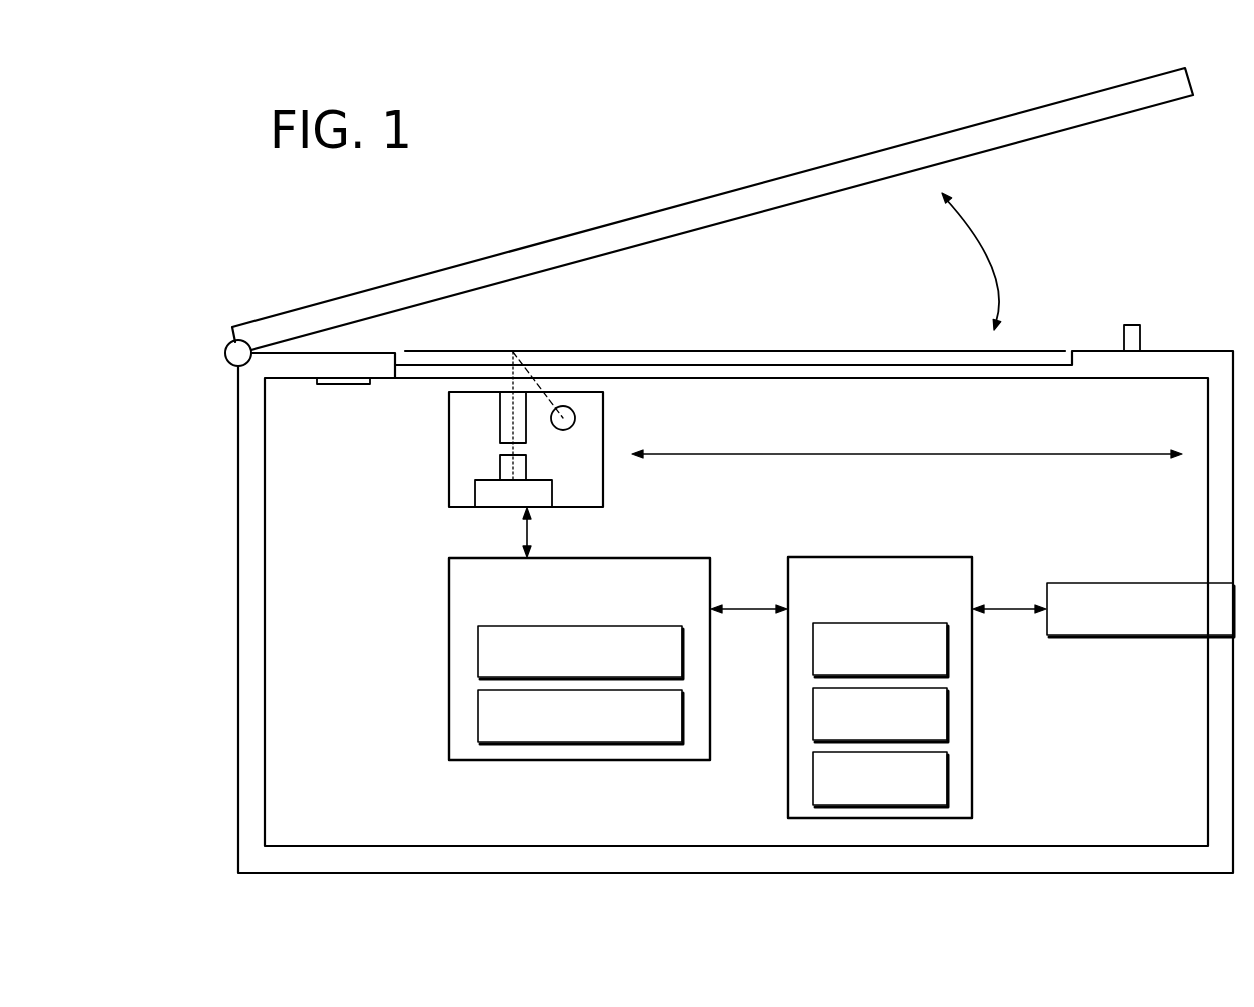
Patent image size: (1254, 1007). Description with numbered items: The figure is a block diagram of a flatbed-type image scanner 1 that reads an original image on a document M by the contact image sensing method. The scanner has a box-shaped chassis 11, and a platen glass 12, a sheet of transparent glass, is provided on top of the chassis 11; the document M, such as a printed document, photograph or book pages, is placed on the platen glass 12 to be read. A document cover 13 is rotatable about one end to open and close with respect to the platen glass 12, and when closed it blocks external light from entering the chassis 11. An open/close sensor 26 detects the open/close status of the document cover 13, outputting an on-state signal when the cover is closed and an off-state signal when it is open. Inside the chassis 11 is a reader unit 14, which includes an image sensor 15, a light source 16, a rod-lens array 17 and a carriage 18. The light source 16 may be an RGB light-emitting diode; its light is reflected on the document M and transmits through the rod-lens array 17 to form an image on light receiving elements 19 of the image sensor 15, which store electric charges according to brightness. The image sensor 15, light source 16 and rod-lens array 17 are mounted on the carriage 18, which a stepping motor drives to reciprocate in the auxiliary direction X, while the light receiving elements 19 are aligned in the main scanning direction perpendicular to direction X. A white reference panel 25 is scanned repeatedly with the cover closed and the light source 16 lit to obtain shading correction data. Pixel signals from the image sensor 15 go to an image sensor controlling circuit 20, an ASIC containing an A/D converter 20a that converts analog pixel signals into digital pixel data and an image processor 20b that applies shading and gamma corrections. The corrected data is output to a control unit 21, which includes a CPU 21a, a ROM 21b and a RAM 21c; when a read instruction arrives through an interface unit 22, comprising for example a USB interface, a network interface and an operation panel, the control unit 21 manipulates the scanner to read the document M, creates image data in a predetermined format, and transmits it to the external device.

The image scanner 1 is at (602, 170).
The chassis 11 is at (238, 490).
The platen glass 12 is at (793, 378).
The document cover 13 is at (817, 168).
The reader unit 14 is at (527, 432).
The image sensor 15 is at (462, 484).
The light source 16 is at (576, 418).
The rod-lens array 17 is at (500, 422).
The carriage 18 is at (603, 485).
The light receiving elements 19 is at (527, 465).
The image sensor controlling circuit 20 is at (551, 686).
The A/D converter 20a is at (478, 646).
The image processor 20b is at (478, 713).
The control unit 21 is at (916, 663).
The CPU 21a is at (947, 648).
The ROM 21b is at (947, 712).
The RAM 21c is at (947, 777).
The interface unit 22 is at (1147, 583).
The white reference panel 25 is at (347, 385).
The open/close sensor 26 is at (1132, 325).
The document M is at (828, 351).
The direction X is at (907, 441).